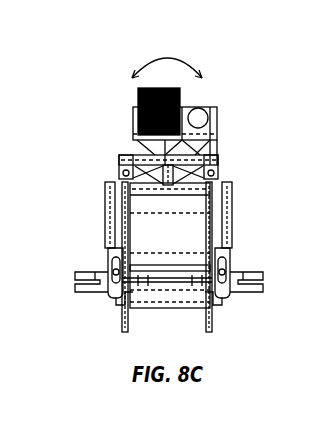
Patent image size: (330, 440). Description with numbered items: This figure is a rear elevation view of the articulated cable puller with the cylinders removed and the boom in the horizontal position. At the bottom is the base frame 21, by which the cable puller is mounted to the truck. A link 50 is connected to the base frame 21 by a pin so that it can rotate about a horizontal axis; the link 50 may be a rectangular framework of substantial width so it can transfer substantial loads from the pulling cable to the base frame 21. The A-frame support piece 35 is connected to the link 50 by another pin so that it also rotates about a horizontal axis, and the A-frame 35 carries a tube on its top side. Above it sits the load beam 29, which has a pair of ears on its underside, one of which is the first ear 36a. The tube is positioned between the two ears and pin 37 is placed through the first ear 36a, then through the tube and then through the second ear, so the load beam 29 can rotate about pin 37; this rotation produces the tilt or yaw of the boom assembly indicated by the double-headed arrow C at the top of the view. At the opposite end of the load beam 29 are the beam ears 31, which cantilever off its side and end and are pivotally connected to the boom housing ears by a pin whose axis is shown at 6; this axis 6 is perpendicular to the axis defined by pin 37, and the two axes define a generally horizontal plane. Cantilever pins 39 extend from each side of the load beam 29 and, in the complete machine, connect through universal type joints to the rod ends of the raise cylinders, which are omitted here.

The double-headed arrow C is at (166, 52).
The load beam 29 is at (172, 152).
The beam ears 31 is at (185, 128).
The axis 6 is at (217, 134).
The cantilever pins 39 is at (125, 158).
The first ear 36a is at (228, 192).
The link 50 is at (104, 228).
The pin 37 is at (169, 192).
The A-frame support piece 35 is at (193, 192).
The base frame 21 is at (181, 283).